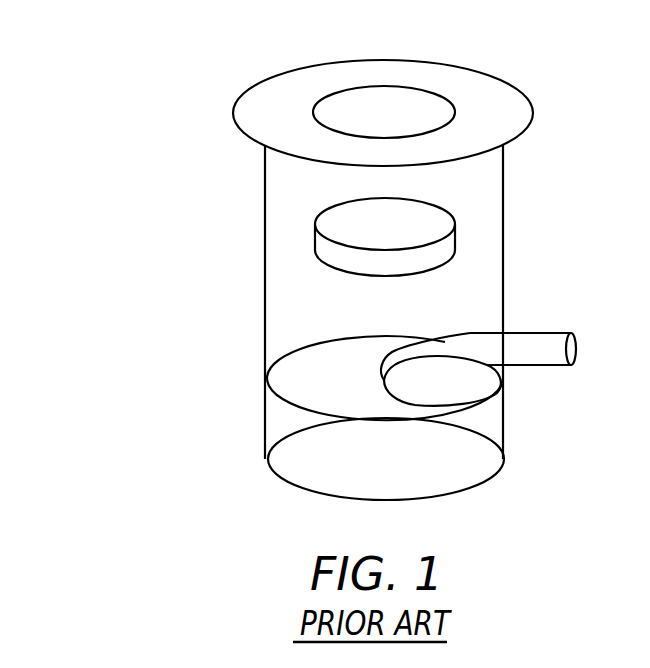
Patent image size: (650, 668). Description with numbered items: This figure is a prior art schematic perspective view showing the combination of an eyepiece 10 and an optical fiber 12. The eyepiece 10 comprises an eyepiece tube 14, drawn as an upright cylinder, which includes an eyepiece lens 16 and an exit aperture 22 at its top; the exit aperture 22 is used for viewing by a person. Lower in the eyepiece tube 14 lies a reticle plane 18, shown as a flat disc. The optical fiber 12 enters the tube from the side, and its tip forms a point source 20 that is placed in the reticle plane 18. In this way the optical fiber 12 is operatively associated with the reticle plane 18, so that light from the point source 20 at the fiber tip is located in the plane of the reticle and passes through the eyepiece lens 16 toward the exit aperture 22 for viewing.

The eyepiece 10 is at (128, 113).
The optical fiber 12 is at (470, 333).
The eyepiece tube 14 is at (492, 280).
The eyepiece lens 16 is at (315, 240).
The reticle plane 18 is at (288, 405).
The point source 20 is at (498, 393).
The exit aperture 22 is at (417, 103).